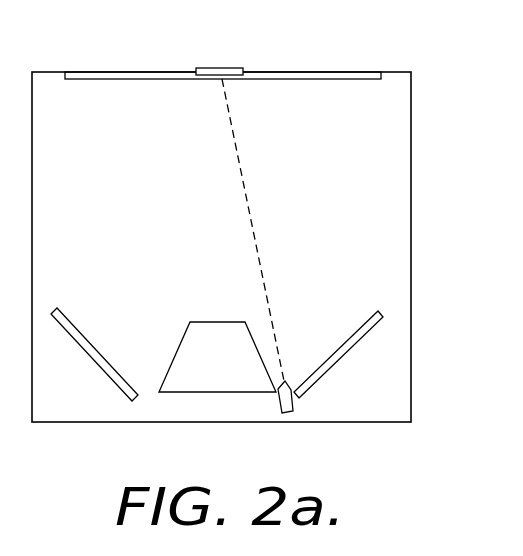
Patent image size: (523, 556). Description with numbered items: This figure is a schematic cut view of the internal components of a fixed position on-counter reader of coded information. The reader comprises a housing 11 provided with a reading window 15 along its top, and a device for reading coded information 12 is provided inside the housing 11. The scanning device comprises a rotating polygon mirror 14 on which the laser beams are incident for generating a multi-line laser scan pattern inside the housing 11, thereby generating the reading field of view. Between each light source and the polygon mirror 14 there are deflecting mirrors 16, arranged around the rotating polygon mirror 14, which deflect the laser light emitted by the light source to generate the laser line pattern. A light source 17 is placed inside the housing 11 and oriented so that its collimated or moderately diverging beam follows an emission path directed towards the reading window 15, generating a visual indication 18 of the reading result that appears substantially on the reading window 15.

The housing 11 is at (411, 136).
The device for reading coded information 12 is at (135, 267).
The rotating polygon mirror 14 is at (200, 348).
The reading window 15 is at (320, 72).
The deflecting mirrors 16 is at (87, 338).
The light source 17 is at (297, 403).
The visual indication 18 is at (223, 68).